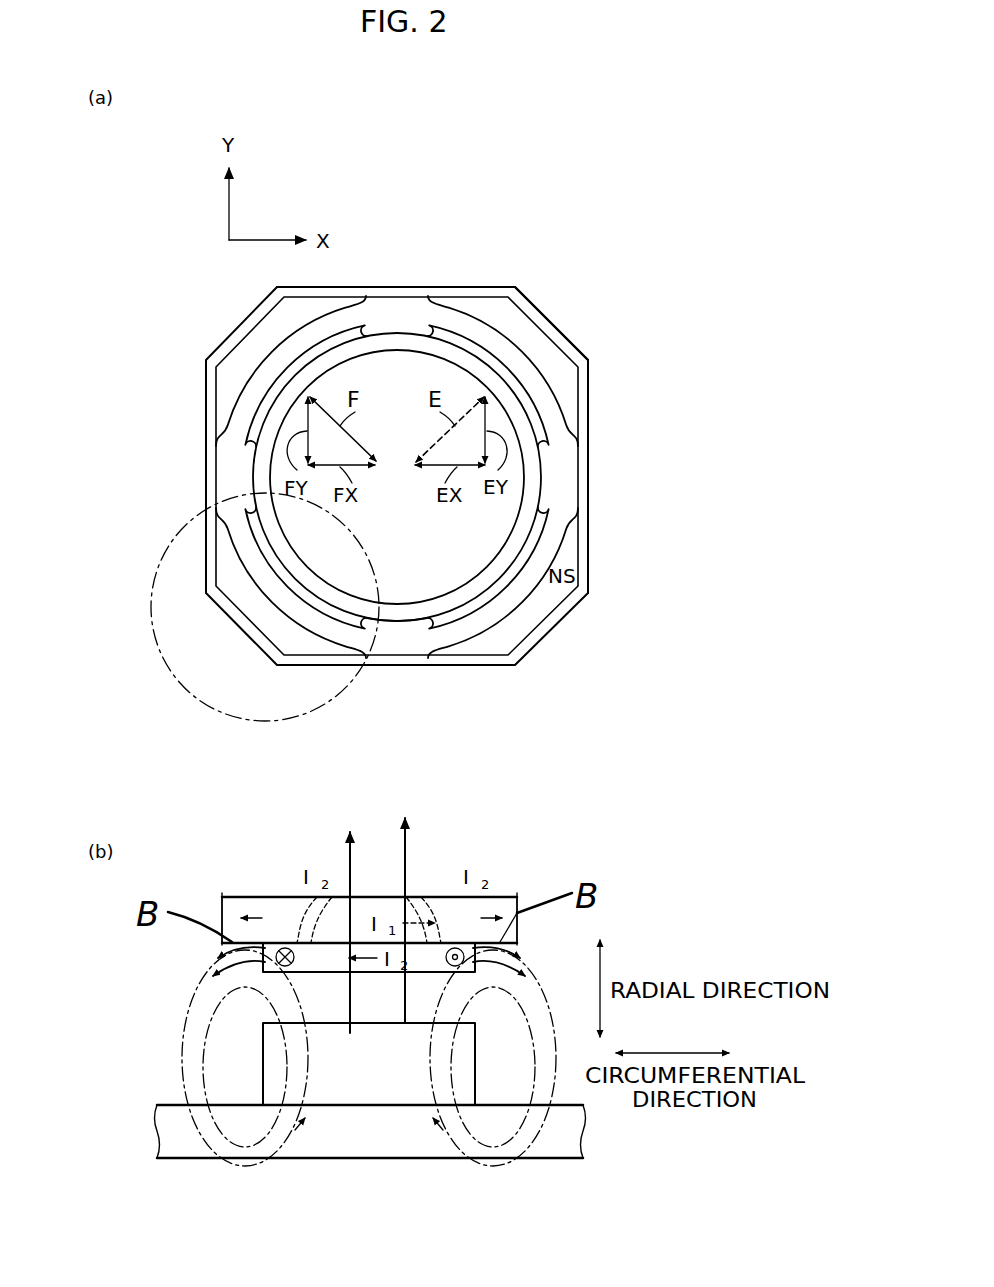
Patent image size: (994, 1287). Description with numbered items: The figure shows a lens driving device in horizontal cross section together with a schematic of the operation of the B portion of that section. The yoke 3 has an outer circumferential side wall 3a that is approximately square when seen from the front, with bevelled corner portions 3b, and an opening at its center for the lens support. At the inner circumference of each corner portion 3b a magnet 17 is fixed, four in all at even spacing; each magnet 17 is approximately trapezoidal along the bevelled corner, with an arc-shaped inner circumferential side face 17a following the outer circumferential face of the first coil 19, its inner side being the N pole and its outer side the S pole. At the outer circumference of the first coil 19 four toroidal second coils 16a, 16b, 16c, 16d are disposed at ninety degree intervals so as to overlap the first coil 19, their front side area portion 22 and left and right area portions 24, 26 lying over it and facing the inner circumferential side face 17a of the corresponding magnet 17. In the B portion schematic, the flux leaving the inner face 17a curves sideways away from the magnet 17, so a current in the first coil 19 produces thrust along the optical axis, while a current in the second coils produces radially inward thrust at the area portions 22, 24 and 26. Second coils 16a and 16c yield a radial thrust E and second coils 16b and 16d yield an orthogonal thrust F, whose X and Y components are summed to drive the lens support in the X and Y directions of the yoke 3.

The yoke 3 is at (485, 280).
The outer circumferential side wall 3a is at (386, 288).
The corner portion 3b is at (562, 333).
The second coil 16a is at (343, 640).
The second coil 16b is at (538, 540).
The second coil 16c is at (523, 387).
The second coil 16d is at (262, 400).
The magnet 17 is at (498, 307).
The inner circumferential side face 17a is at (504, 1015).
The first coil 19 is at (404, 630).
The front side area portion 22 is at (369, 981).
The left side area portion 24 is at (288, 897).
The right side area portion 26 is at (503, 897).
The magnetic flux direction A is at (343, 878).
The B portion B is at (172, 670).